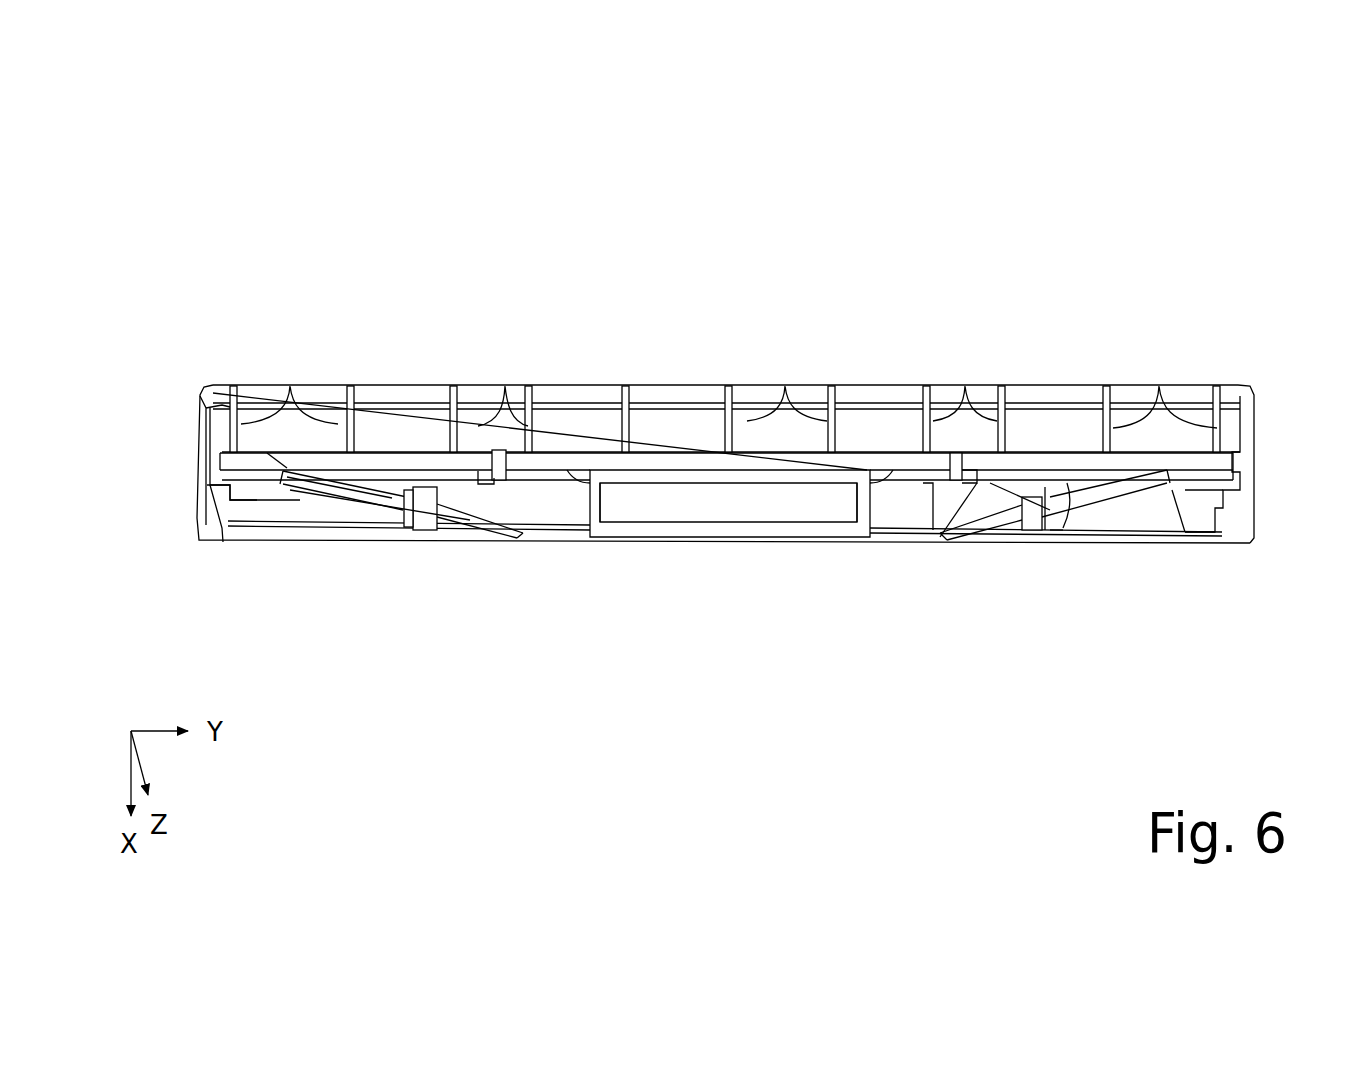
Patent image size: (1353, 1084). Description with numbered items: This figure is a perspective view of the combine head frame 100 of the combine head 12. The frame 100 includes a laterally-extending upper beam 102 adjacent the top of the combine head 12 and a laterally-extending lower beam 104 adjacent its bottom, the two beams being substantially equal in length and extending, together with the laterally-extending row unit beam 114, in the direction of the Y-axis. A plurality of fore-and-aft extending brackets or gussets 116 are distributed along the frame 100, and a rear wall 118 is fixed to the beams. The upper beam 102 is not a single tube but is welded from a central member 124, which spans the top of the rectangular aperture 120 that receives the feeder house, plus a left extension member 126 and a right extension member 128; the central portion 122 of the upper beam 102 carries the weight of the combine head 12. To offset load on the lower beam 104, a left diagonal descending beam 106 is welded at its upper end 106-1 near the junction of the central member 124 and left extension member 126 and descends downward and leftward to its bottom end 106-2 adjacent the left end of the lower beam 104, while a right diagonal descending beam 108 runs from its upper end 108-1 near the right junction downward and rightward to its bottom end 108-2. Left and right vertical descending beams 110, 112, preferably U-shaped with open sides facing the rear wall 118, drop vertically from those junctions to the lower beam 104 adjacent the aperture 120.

The combine head 12 is at (370, 182).
The combine head frame 100 is at (1032, 210).
The upper beam 102 is at (667, 527).
The lower beam 104 is at (888, 462).
The left diagonal descending beam 106 is at (1067, 486).
The upper end of left diagonal descending beam 106-1 is at (951, 565).
The bottom end of left diagonal descending beam 106-2 is at (1165, 503).
The right diagonal descending beam 108 is at (394, 515).
The upper end of right diagonal descending beam 108-1 is at (503, 556).
The bottom end of right diagonal descending beam 108-2 is at (290, 500).
The left vertical descending beam 110 is at (940, 504).
The right vertical descending beam 112 is at (512, 498).
The row unit beam 114 is at (672, 392).
The brackets or gussets 116 is at (290, 386).
The rear wall 118 is at (257, 493).
The rectangular aperture 120 is at (636, 512).
The central portion of upper beam 122 is at (711, 582).
The central member 124 is at (770, 541).
The left extension member 126 is at (1096, 531).
The right extension member 128 is at (333, 520).